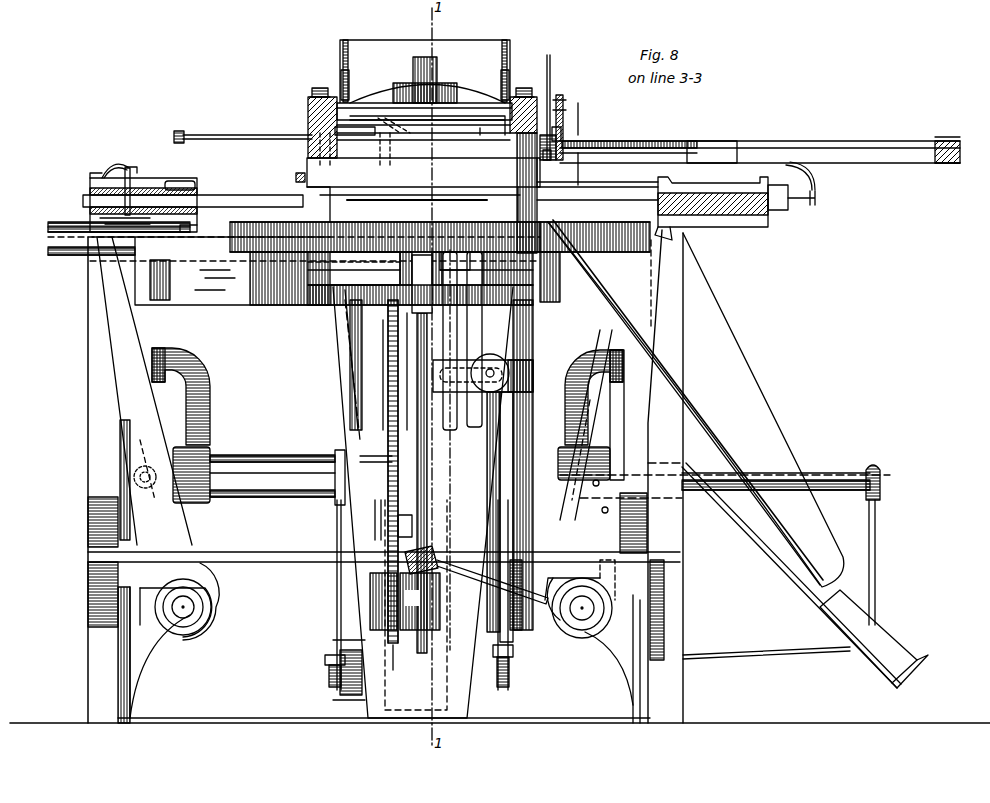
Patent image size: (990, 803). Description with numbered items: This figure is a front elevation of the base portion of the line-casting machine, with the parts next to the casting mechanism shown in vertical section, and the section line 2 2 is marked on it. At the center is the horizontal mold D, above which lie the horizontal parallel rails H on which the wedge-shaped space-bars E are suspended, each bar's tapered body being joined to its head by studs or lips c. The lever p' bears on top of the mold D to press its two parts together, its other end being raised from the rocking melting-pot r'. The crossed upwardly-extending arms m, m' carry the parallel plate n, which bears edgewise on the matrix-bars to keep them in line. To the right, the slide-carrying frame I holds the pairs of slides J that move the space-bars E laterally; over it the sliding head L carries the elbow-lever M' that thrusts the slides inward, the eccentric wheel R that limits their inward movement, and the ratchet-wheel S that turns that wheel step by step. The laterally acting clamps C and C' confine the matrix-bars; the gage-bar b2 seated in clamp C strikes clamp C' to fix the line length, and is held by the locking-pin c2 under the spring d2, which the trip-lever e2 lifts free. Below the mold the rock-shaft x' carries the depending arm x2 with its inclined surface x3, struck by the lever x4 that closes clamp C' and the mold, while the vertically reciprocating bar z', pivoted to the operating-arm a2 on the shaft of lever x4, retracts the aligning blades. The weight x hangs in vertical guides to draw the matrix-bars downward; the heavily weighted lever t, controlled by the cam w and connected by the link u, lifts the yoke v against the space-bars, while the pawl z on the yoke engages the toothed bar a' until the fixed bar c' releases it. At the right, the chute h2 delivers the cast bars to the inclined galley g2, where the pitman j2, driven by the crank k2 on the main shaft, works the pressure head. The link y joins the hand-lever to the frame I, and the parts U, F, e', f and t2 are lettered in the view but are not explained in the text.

The parallel plate n is at (424, 78).
The upwardly-extending arm m is at (425, 71).
The upwardly-extending arm m' is at (425, 85).
The horizontal parallel rails H is at (422, 123).
The link y is at (420, 126).
The lever p' is at (384, 141).
The horizontal mold D is at (423, 190).
The space-bars E is at (515, 172).
The rocking melting-pot r' is at (417, 207).
The trip-lever e2 is at (297, 175).
The sliding head L is at (552, 90).
The elbow-lever M' is at (574, 120).
The pawl U is at (559, 125).
The eccentric wheel R is at (556, 159).
The ratchet-wheel S is at (549, 166).
The section line 2 is at (584, 140).
The slides J is at (582, 141).
The slide-carrying frame I is at (612, 141).
The matrix-bar clamp C' is at (735, 201).
The laterally-acting clamp C is at (143, 200).
The gage-bar b2 is at (193, 194).
The spring d2 is at (109, 160).
The locking-pin c2 is at (132, 168).
The adjusting rod e' is at (243, 143).
The rock-shaft x' is at (259, 486).
The toothed bar a' is at (423, 502).
The vertically-reciprocating bar z' is at (422, 284).
The fixed bar c' is at (365, 370).
The depending arm x2 is at (462, 450).
The inclined surface x3 is at (483, 373).
The frame column F is at (510, 471).
The weight x is at (382, 465).
The studs or lips c is at (371, 520).
The pawl z is at (405, 526).
The operating-arm a2 is at (454, 580).
The yoke v is at (326, 578).
The link u is at (337, 616).
The weighted lever t is at (325, 666).
The cam w is at (524, 573).
The pin f is at (396, 658).
The lever x4 is at (595, 425).
The eccentric or crank k2 is at (730, 480).
The pitman j2 is at (881, 562).
The chute h2 is at (696, 403).
The inclined galley g2 is at (791, 575).
The handle t2 is at (874, 639).